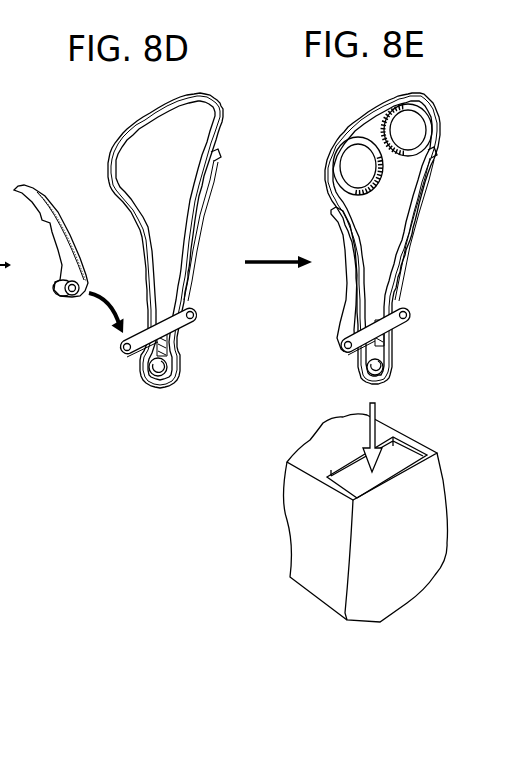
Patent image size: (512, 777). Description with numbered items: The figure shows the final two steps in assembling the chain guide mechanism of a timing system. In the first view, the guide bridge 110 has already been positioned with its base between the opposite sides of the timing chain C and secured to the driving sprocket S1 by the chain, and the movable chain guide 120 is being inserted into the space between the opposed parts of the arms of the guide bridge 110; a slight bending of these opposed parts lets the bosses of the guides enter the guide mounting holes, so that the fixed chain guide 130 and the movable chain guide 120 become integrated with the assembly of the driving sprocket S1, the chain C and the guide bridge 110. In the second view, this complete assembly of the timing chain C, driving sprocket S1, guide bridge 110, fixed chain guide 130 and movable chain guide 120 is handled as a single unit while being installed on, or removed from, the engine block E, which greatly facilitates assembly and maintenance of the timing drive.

In FIG. 8D, the timing chain C is at (222, 137).
In FIG. 8E, the timing chain C is at (433, 133).
In FIG. 8D, the movable chain guide 120 is at (70, 257).
In FIG. 8E, the movable chain guide 120 is at (352, 308).
In FIG. 8D, the fixed chain guide 130 is at (187, 300).
In FIG. 8E, the fixed chain guide 130 is at (397, 298).
In FIG. 8D, the guide bridge 110 is at (173, 327).
In FIG. 8E, the guide bridge 110 is at (390, 322).
In FIG. 8D, the driving sprocket S1 is at (162, 377).
In FIG. 8E, the driving sprocket S1 is at (383, 371).
In FIG. 8E, the engine block E is at (312, 545).